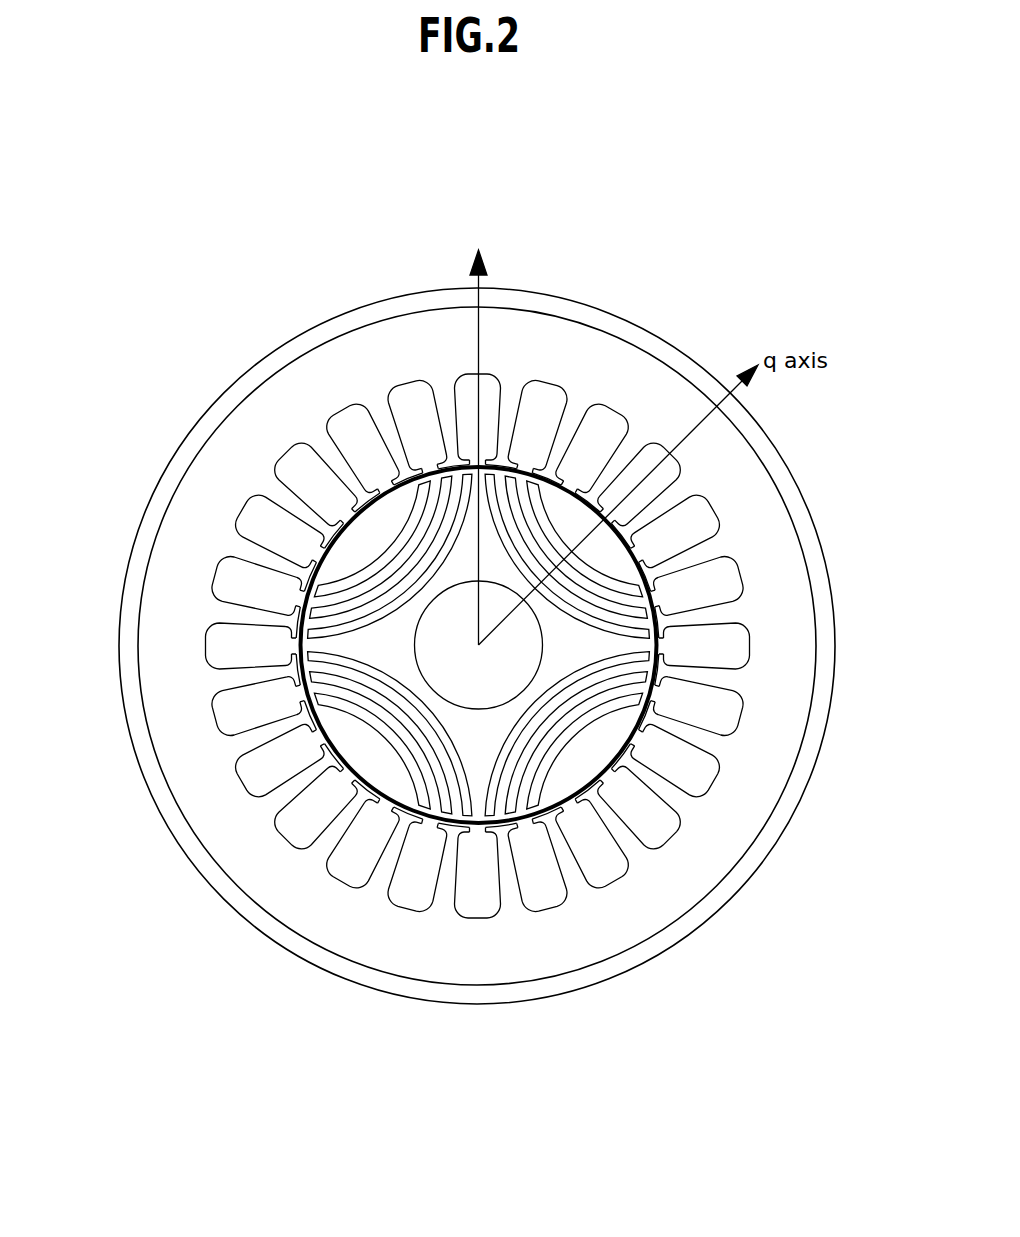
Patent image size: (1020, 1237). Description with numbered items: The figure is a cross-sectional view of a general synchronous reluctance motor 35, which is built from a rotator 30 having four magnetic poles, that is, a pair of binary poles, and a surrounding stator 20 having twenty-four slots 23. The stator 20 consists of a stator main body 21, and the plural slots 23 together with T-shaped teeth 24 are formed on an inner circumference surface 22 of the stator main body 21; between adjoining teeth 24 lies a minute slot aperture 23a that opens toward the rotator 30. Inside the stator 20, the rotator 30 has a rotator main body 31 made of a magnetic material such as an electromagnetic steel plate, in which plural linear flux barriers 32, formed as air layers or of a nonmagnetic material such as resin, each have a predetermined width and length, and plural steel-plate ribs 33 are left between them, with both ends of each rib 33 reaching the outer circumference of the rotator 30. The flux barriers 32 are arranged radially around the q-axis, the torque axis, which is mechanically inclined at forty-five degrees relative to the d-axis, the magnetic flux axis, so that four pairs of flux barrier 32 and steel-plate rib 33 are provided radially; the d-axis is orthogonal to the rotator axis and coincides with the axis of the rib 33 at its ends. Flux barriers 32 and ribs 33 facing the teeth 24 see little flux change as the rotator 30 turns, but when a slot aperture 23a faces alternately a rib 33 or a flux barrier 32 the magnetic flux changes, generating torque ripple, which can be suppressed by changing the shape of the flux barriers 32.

The stator 20 is at (590, 299).
The stator main body 21 is at (601, 372).
The inner circumference surface 22 is at (590, 527).
The slot 23 is at (543, 888).
The slot aperture 23a is at (524, 821).
The tooth 24 is at (702, 675).
The rotator 30 is at (410, 484).
The rotator main body 31 is at (337, 648).
The flux barrier 32 is at (395, 675).
The steel-plate rib 33 is at (393, 597).
The synchronous reluctance motor 35 is at (543, 238).